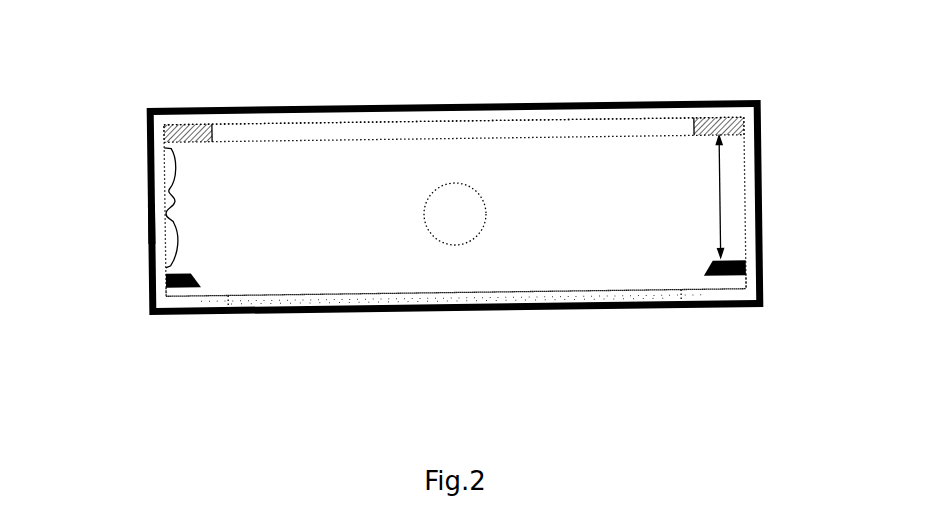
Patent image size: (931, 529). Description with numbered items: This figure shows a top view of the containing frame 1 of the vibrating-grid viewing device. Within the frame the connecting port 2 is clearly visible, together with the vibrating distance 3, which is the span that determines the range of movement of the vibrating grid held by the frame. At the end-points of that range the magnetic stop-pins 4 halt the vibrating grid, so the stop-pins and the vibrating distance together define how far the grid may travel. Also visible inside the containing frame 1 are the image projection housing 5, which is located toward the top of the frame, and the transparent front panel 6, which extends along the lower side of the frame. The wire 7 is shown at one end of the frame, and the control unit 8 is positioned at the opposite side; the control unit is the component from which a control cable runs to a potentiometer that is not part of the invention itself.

The containing frame 1 is at (776, 153).
The connecting port 2 is at (453, 208).
The vibrating distance 3 is at (731, 207).
The magnetic stop-pins 4 is at (691, 275).
The image projection housing 5 is at (506, 124).
The transparent front panel 6 is at (646, 299).
The wire 7 is at (164, 162).
The control unit 8 is at (144, 224).